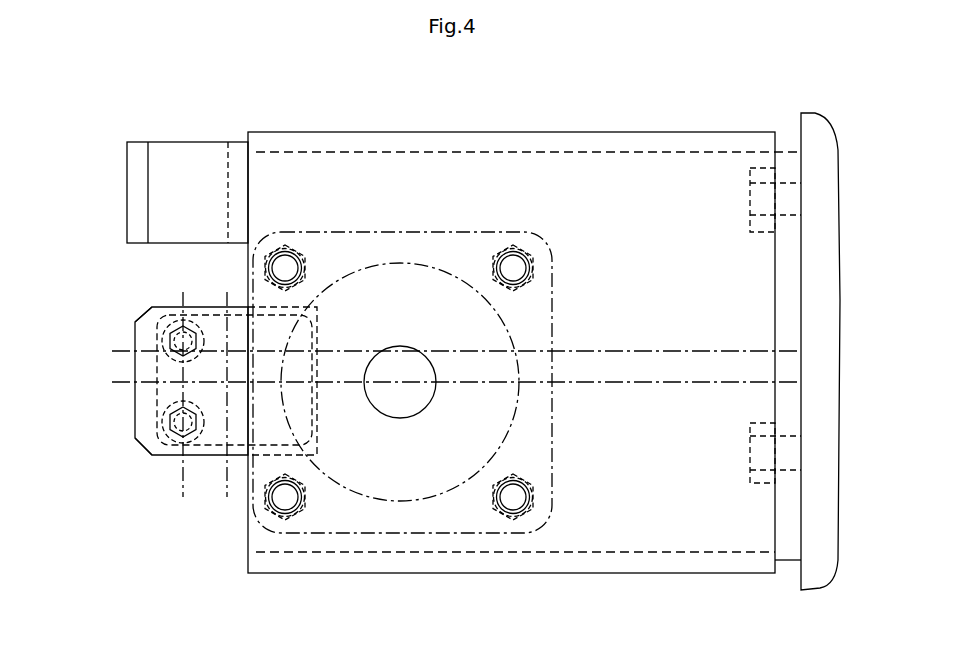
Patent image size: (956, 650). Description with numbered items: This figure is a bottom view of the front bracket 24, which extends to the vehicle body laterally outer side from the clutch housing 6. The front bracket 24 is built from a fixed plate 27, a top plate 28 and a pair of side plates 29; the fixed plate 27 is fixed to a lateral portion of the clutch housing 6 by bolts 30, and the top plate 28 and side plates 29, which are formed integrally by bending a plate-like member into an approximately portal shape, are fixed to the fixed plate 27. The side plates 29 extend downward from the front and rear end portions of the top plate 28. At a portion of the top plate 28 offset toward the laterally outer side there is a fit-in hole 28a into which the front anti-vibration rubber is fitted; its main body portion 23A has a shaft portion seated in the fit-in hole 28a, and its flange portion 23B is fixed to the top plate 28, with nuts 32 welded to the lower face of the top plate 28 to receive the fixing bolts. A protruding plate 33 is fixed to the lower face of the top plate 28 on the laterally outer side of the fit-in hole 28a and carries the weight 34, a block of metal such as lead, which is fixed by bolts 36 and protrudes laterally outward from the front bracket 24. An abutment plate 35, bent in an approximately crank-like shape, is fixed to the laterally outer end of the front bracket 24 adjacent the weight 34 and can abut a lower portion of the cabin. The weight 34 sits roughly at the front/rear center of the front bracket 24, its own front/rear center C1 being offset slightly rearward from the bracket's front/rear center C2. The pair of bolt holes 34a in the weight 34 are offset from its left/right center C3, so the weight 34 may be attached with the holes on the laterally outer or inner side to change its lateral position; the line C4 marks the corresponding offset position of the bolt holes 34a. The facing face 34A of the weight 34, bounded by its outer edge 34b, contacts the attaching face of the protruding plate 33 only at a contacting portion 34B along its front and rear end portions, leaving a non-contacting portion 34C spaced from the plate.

The front bracket 24 is at (372, 118).
The top plate 28 is at (533, 170).
The side plates 29 is at (623, 132).
The fixed plate 27 is at (790, 150).
The clutch housing 6 is at (815, 300).
The abutment plate 35 is at (130, 187).
The main body portion 23A is at (448, 264).
The flange portion 23B is at (552, 330).
The fit-in hole 28a is at (430, 403).
The nuts 32 is at (298, 248).
The bolts 30 is at (750, 198).
The protruding plate 33 is at (148, 454).
The facing face 34A is at (228, 382).
The contacting portion 34B is at (145, 314).
The non-contacting portion 34C is at (142, 421).
The bolts 36 is at (176, 332).
The bolt holes 34a is at (197, 345).
The outer edge 34b is at (160, 460).
The weight 34 is at (182, 516).
The front/rear center of the weight C1 is at (441, 381).
The front/rear center of the front bracket C2 is at (441, 351).
The left/right center of the weight C3 is at (226, 408).
The center line C4 is at (184, 408).